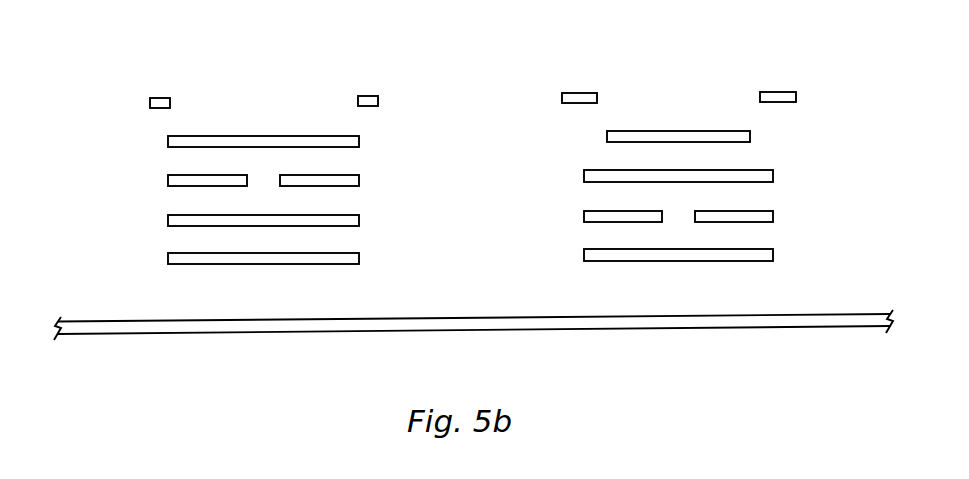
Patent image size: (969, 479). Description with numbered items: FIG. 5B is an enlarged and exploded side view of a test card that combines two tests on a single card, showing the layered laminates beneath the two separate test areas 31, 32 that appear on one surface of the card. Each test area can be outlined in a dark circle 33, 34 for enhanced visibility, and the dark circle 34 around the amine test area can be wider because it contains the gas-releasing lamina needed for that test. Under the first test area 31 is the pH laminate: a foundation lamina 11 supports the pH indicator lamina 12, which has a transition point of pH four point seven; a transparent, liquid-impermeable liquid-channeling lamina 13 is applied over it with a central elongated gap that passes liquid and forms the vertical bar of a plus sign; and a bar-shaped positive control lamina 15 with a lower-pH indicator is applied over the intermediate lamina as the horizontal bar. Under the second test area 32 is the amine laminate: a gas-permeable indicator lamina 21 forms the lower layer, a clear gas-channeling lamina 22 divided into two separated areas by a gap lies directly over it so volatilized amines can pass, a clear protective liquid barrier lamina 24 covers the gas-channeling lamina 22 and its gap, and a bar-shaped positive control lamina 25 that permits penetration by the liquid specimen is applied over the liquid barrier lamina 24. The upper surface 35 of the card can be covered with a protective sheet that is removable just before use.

The foundation lamina 11 is at (181, 253).
The pH indicator lamina 12 is at (178, 215).
The liquid-channeling lamina 13 is at (178, 175).
The positive control lamina 15 is at (176, 136).
The gas-permeable indicator lamina 21 is at (602, 249).
The gas-channeling lamina 22 is at (597, 211).
The protective liquid barrier lamina 24 is at (598, 170).
The positive control lamina 25 is at (617, 131).
The test area 31 is at (210, 150).
The test area 32 is at (624, 146).
The dark circle 33 is at (368, 95).
The dark circle 34 is at (780, 92).
The upper surface 35 is at (382, 319).